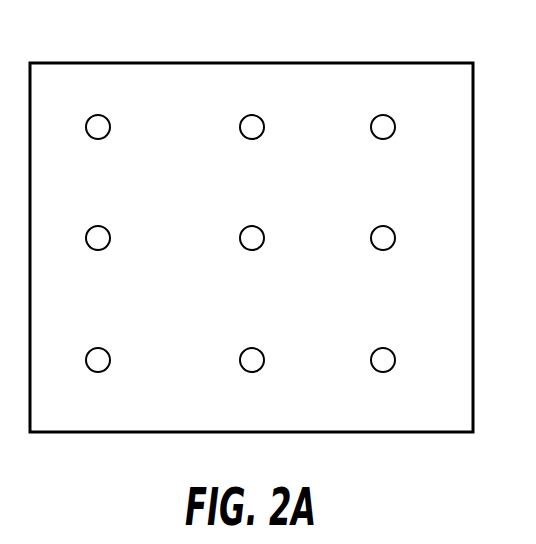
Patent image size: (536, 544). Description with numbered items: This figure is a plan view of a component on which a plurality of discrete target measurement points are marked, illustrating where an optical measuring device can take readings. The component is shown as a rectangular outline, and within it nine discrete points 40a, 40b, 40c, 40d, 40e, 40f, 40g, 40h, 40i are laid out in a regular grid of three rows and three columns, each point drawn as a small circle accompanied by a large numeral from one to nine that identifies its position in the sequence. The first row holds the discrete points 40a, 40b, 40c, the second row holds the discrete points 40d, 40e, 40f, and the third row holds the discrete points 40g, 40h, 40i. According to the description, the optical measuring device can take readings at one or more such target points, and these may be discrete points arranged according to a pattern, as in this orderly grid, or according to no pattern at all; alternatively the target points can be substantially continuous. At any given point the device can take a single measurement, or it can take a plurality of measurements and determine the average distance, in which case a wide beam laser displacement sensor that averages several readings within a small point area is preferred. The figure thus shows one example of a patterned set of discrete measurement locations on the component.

The discrete point 40a is at (98, 127).
The discrete point 40b is at (252, 127).
The discrete point 40c is at (383, 127).
The discrete point 40d is at (98, 238).
The discrete point 40e is at (252, 238).
The discrete point 40f is at (383, 238).
The discrete point 40g is at (98, 360).
The discrete point 40h is at (252, 360).
The discrete point 40i is at (383, 360).